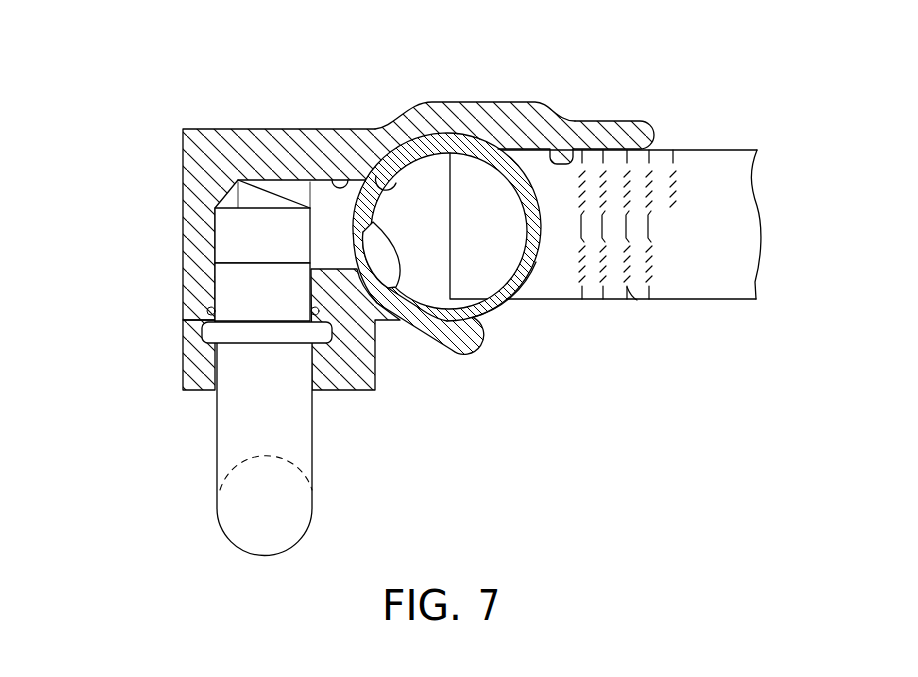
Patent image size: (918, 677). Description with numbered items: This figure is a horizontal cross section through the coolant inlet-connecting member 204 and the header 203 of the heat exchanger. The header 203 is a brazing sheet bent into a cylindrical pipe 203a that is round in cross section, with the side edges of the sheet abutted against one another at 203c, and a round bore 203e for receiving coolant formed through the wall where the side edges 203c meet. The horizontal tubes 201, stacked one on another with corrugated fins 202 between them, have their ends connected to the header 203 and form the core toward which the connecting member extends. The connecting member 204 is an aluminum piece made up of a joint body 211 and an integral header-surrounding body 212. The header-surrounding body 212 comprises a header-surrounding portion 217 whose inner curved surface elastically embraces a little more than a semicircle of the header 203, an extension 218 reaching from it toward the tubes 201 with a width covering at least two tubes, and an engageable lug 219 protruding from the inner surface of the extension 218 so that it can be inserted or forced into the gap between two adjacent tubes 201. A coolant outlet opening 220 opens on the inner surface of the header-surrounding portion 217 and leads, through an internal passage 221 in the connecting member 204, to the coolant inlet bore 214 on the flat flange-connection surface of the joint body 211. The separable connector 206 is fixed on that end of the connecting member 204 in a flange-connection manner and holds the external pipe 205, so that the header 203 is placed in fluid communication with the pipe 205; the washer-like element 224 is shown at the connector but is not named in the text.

The horizontal tube 201 is at (706, 283).
The corrugated fin 202 is at (634, 300).
The header 203 is at (516, 286).
The cylindrical pipe 203a is at (494, 314).
The abutted side edges 203c is at (400, 314).
The round bore 203e is at (386, 142).
The coolant inlet-connecting member 204 is at (222, 120).
The external pipe 205 is at (237, 498).
The separable connector 206 is at (193, 371).
The joint body 211 is at (195, 226).
The header-surrounding body 212 is at (493, 90).
The coolant inlet bore 214 is at (206, 283).
The header-surrounding portion 217 is at (440, 344).
The extension 218 is at (612, 125).
The engageable lug 219 is at (560, 141).
The coolant outlet opening 220 is at (336, 182).
The internal passage 221 is at (320, 210).
The washer 224 is at (200, 308).